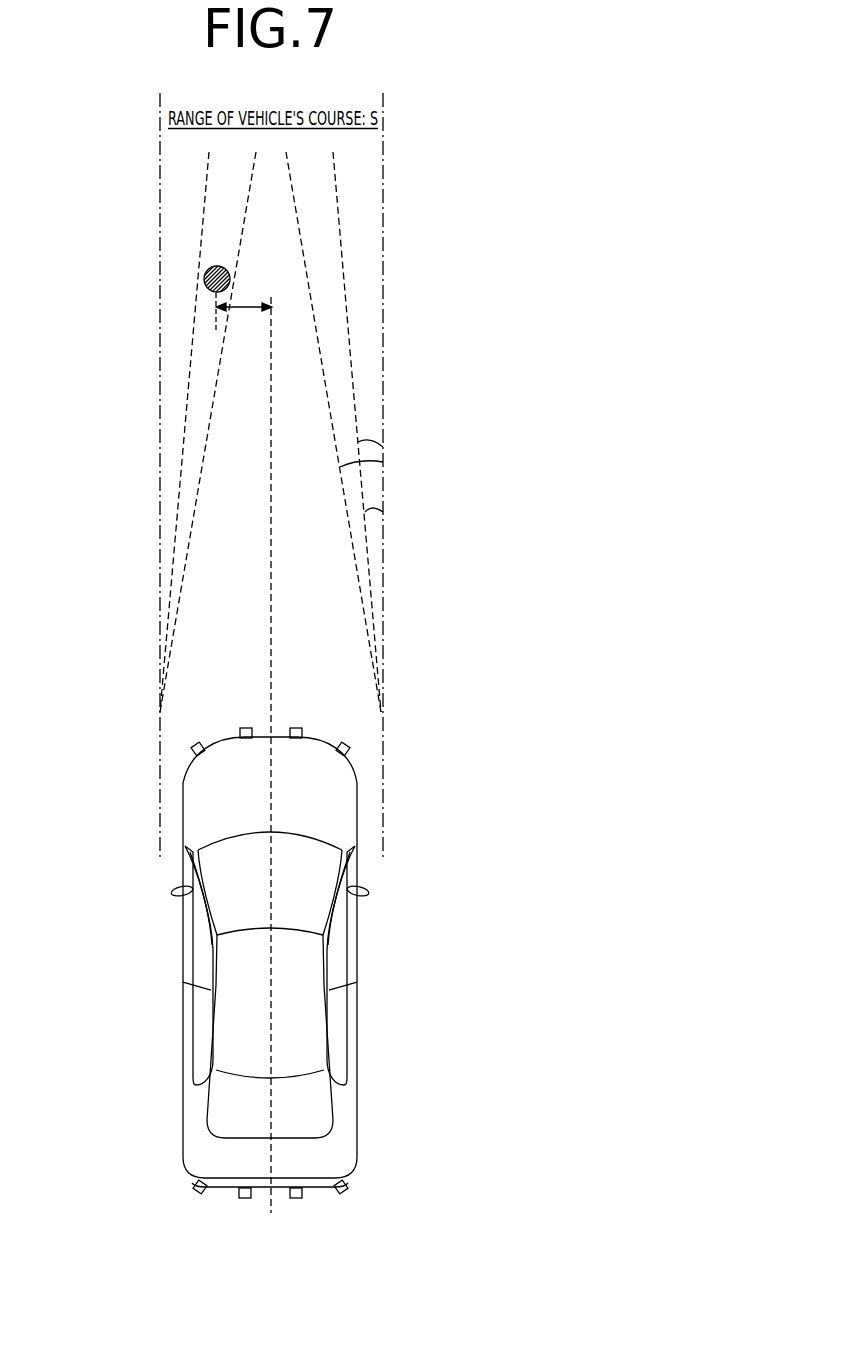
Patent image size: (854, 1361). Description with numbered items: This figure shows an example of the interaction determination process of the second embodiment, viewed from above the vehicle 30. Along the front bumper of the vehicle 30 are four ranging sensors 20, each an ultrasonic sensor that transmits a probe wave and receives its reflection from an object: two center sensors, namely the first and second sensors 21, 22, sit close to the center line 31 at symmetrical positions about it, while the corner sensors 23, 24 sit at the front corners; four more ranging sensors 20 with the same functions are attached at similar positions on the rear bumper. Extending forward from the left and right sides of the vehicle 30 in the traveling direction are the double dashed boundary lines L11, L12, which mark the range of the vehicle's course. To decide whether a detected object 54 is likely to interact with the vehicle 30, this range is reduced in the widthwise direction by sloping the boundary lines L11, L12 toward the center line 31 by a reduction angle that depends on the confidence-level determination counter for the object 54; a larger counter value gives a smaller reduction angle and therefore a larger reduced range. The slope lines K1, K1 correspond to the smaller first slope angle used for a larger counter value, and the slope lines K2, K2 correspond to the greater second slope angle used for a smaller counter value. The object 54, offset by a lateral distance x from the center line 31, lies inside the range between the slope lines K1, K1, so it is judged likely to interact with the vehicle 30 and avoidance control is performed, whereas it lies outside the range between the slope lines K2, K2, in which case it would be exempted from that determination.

The ranging sensor 20 is at (271, 939).
The first sensor 21 is at (300, 735).
The second sensor 22 is at (243, 735).
The corner sensor 23 is at (348, 748).
The corner sensor 24 is at (195, 748).
The vehicle 30 is at (357, 1015).
The center line 31 is at (272, 774).
The object 54 is at (204, 281).
The slope line K1 is at (187, 407).
The slope line K2 is at (217, 376).
The boundary line L11 is at (388, 585).
The boundary line L12 is at (158, 586).
The lateral distance x is at (244, 306).